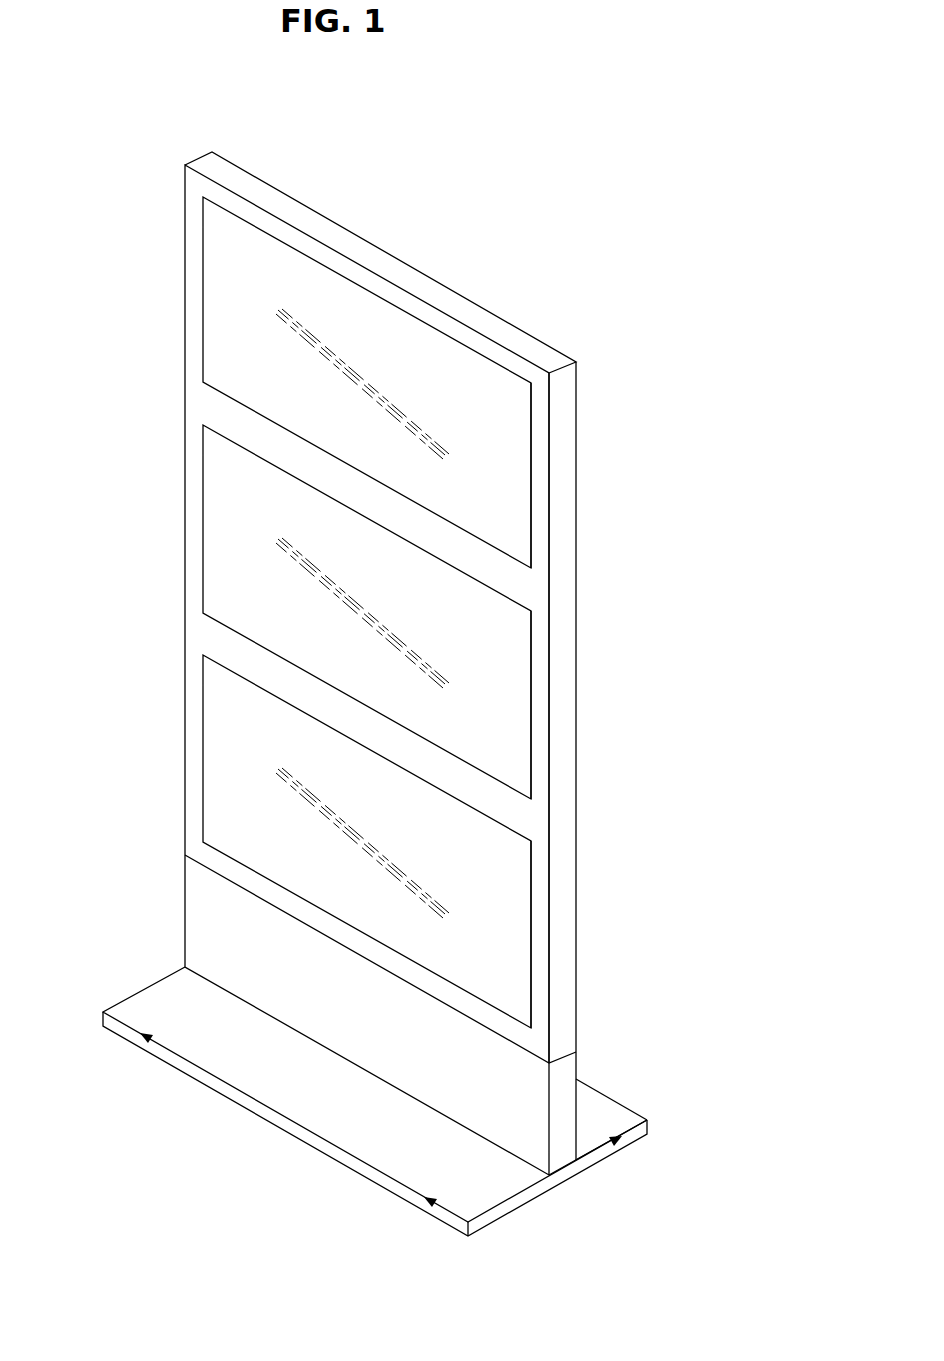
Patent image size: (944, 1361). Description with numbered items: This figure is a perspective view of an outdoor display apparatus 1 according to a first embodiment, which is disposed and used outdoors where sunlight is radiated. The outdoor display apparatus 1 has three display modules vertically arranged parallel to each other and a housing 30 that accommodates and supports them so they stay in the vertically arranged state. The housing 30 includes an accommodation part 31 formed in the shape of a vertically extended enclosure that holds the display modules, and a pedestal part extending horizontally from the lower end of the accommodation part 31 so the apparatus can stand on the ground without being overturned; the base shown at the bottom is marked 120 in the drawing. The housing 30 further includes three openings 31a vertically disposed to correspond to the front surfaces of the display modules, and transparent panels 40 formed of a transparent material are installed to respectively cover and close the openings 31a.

The outdoor display apparatus 1 is at (556, 141).
The housing 30 is at (572, 537).
The accommodation part 31 is at (565, 745).
The openings 31a is at (530, 442).
The transparent panels 40 is at (262, 378).
The base 120 is at (620, 1112).